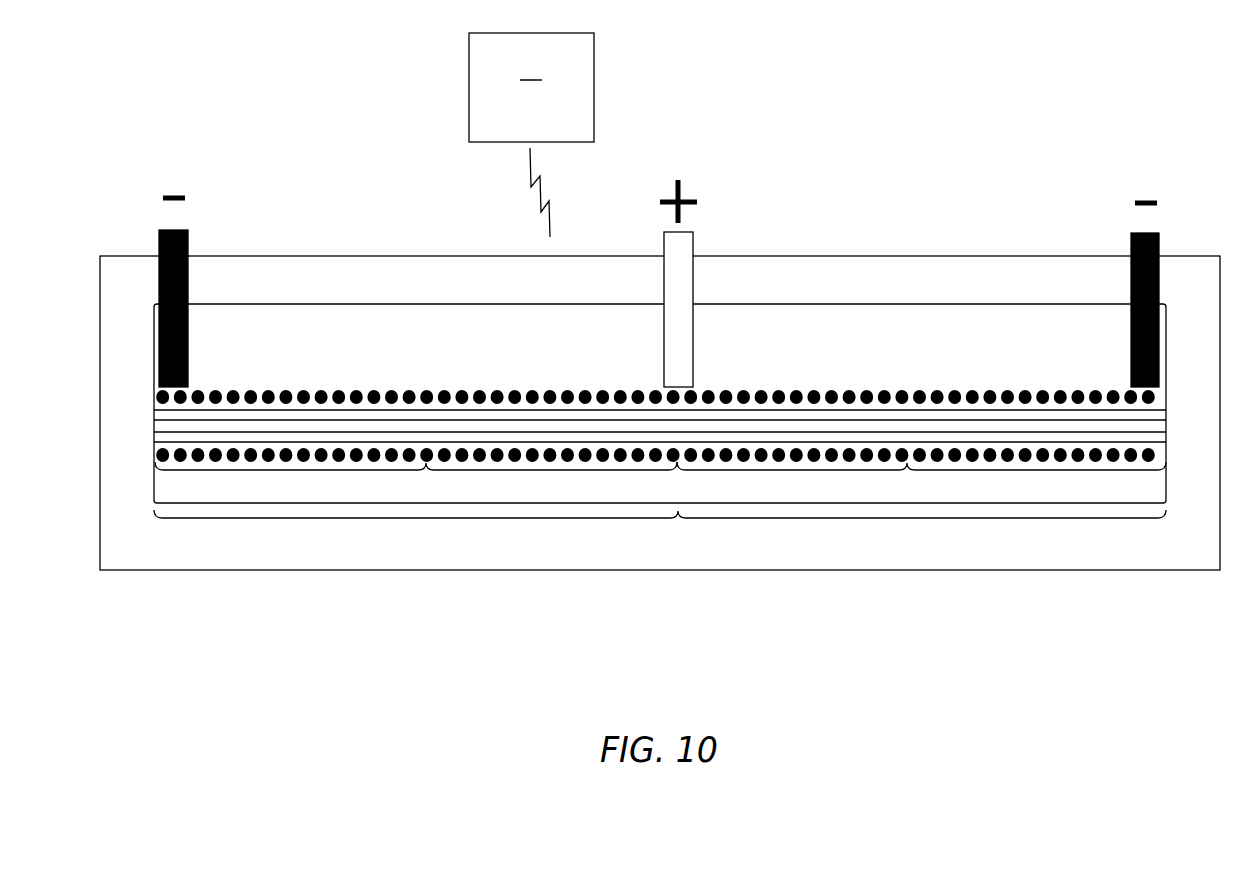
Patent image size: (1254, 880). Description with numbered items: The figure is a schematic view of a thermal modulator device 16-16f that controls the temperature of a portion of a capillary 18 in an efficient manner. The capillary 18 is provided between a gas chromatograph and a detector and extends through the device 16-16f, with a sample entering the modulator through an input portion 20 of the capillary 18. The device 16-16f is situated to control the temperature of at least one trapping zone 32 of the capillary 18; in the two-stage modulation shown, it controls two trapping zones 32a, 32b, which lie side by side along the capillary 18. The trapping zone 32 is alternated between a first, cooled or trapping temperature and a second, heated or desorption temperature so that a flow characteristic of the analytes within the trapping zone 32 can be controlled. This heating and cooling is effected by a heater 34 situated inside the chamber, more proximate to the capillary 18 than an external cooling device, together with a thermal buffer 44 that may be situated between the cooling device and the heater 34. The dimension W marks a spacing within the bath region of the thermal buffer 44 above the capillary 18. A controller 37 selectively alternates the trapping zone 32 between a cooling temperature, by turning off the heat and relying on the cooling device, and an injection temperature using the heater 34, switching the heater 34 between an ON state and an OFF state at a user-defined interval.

The thermal modulator 16-16f is at (109, 144).
The controller 37 is at (531, 135).
The thermal buffer 44 is at (805, 352).
The heater 34 is at (303, 390).
The electrolyte depth W is at (409, 306).
The input portion 20 is at (348, 435).
The capillary 18 is at (562, 443).
The first trapping zone 32a is at (416, 481).
The second trapping zone 32b is at (921, 482).
The trapping zone 32 is at (660, 533).